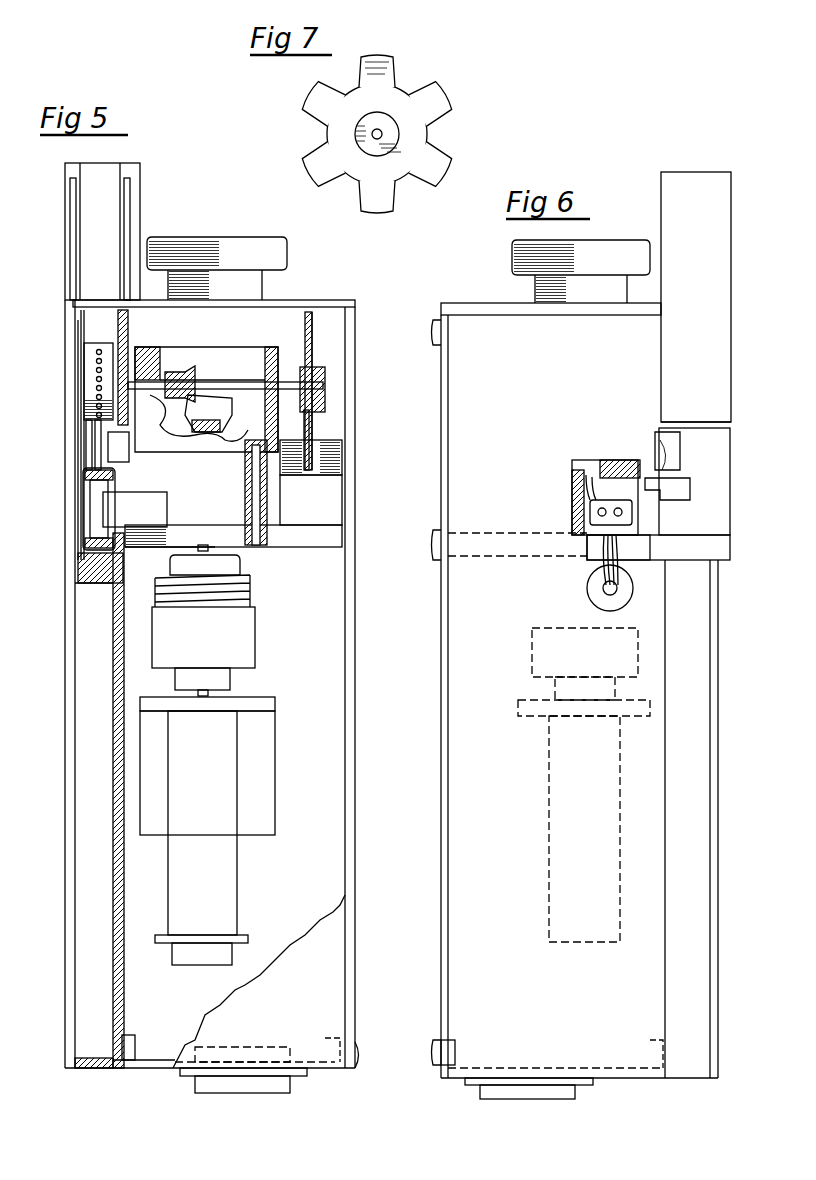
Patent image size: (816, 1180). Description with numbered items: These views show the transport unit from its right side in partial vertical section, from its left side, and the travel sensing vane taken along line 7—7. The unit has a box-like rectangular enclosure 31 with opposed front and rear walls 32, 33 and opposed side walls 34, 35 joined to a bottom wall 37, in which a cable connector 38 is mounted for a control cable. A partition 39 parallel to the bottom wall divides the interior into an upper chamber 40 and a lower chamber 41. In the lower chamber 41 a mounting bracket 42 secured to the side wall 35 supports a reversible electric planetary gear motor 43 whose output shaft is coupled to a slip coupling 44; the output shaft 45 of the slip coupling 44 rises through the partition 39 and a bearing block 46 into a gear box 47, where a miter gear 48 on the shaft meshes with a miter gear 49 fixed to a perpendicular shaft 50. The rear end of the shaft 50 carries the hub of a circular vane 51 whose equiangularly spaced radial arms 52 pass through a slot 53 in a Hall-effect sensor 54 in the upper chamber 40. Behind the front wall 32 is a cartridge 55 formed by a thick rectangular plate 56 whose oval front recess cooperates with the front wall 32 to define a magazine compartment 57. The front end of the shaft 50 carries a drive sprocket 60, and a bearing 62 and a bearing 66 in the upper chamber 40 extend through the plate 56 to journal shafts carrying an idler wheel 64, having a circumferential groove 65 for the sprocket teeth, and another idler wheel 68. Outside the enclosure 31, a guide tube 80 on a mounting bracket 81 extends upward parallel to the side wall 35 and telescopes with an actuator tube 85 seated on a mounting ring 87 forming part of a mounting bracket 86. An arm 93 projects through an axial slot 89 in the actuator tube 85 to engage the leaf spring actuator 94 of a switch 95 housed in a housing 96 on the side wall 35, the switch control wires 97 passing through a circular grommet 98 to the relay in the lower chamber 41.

In FIG. 5, the section line 7— 7 is at (320, 318).
In FIG. 5, the enclosure 31 is at (325, 300).
In FIG. 6, the enclosure 31 is at (463, 303).
In FIG. 5, the front wall 32 is at (65, 692).
In FIG. 6, the front wall 32 is at (718, 890).
In FIG. 5, the rear wall 33 is at (350, 768).
In FIG. 6, the rear wall 33 is at (441, 868).
In FIG. 5, the side wall 34 is at (332, 1000).
In FIG. 6, the side wall 35 is at (441, 944).
In FIG. 5, the bottom wall 37 is at (148, 1070).
In FIG. 5, the cable connector 38 is at (206, 1090).
In FIG. 5, the partition 39 is at (320, 547).
In FIG. 6, the partition 39 is at (489, 532).
In FIG. 5, the upper chamber 40 is at (268, 313).
In FIG. 5, the lower chamber 41 is at (335, 693).
In FIG. 5, the mounting bracket 42 is at (268, 770).
In FIG. 5, the planetary gear motor 43 is at (237, 874).
In FIG. 6, the planetary gear motor 43 is at (548, 822).
In FIG. 5, the slip coupling 44 is at (255, 638).
In FIG. 5, the output shaft 45 is at (256, 545).
In FIG. 5, the bearing block 46 is at (178, 528).
In FIG. 5, the gear box 47 is at (250, 350).
In FIG. 5, the miter gear 48 is at (232, 412).
In FIG. 5, the miter gear 49 is at (186, 366).
In FIG. 5, the shaft 50 is at (222, 382).
In FIG. 7, the shaft 50 is at (352, 134).
In FIG. 5, the vane 51 is at (318, 357).
In FIG. 7, the vane 51 is at (423, 90).
In FIG. 5, the arms 52 is at (315, 332).
In FIG. 7, the arms 52 is at (433, 157).
In FIG. 5, the slot 53 is at (302, 436).
In FIG. 5, the Hall-effect sensor 54 is at (332, 448).
In FIG. 5, the cartridge 55 is at (90, 572).
In FIG. 5, the plate 56 is at (113, 884).
In FIG. 5, the magazine compartment 57 is at (90, 588).
In FIG. 5, the drive sprocket 60 is at (84, 358).
In FIG. 5, the bearing 62 is at (129, 440).
In FIG. 5, the idler wheel 64 is at (86, 455).
In FIG. 5, the circumferential groove 65 is at (95, 468).
In FIG. 5, the bearing 66 is at (148, 492).
In FIG. 5, the idler wheel 68 is at (83, 548).
In FIG. 5, the guide tube 80 is at (65, 325).
In FIG. 6, the guide tube 80 is at (661, 219).
In FIG. 5, the mounting bracket 81 is at (128, 220).
In FIG. 5, the actuator tube 85 is at (65, 440).
In FIG. 6, the actuator tube 85 is at (722, 465).
In FIG. 6, the mounting bracket 86 is at (635, 558).
In FIG. 6, the mounting ring 87 is at (725, 556).
In FIG. 6, the axial slot 89 is at (660, 440).
In FIG. 6, the arm 93 is at (664, 498).
In FIG. 6, the leaf spring actuator 94 is at (612, 462).
In FIG. 6, the switch 95 is at (590, 518).
In FIG. 6, the housing 96 is at (572, 472).
In FIG. 6, the switch control wires 97 is at (600, 560).
In FIG. 6, the grommet 98 is at (587, 590).